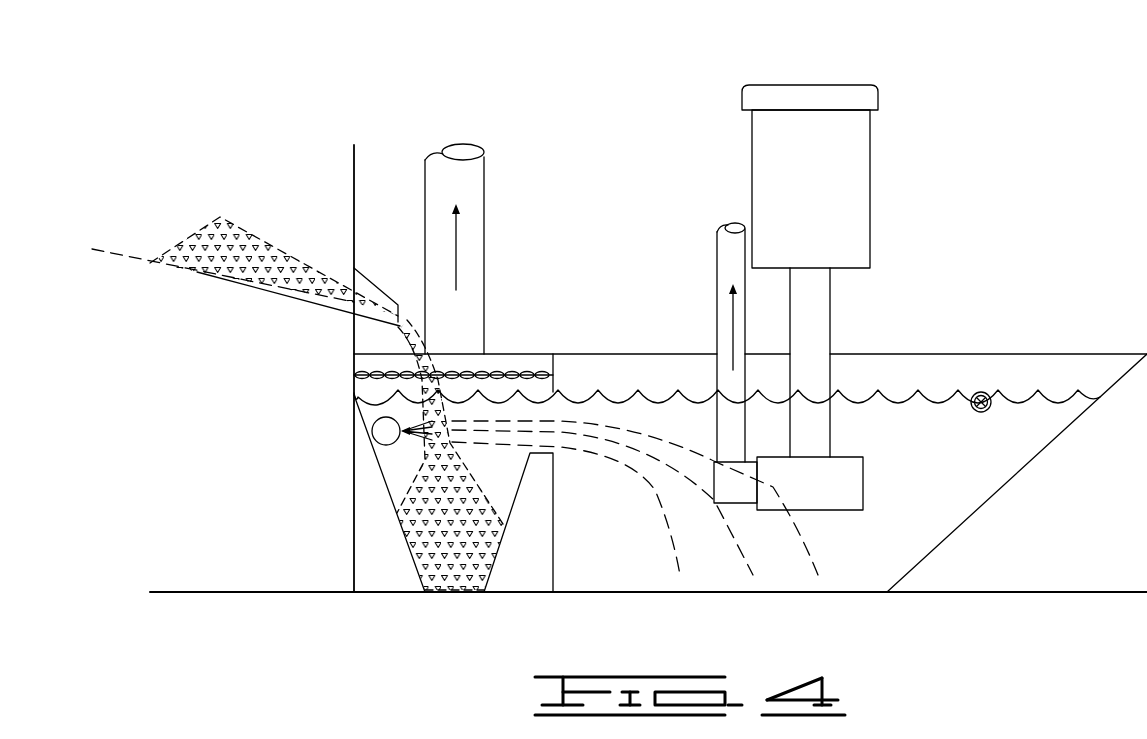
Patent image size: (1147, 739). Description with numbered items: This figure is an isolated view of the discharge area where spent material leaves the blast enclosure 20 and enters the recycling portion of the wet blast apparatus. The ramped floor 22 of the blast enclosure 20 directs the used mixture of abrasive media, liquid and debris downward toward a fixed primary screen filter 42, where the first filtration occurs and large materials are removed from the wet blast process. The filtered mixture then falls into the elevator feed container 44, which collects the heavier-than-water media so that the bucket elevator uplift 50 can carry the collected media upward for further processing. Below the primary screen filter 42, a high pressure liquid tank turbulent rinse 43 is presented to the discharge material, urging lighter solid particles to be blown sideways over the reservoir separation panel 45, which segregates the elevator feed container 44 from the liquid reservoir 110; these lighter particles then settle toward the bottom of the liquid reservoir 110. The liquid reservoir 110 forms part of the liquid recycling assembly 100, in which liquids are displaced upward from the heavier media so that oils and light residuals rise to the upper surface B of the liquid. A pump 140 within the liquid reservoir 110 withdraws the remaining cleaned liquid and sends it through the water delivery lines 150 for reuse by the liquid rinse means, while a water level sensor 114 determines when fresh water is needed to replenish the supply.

The blast enclosure 20 is at (357, 163).
The ramped floor 22 is at (198, 278).
The fixed primary screen filter 42 is at (505, 375).
The high pressure liquid tank turbulent rinse 43 is at (382, 431).
The elevator feed container 44 is at (387, 487).
The reservoir separation panel 45 is at (555, 553).
The bucket elevator uplift 50 is at (486, 222).
The liquid recycling assembly 100 is at (1007, 228).
The liquid reservoir 110 is at (1018, 475).
The water level sensor 114 is at (985, 392).
The pump 140 is at (826, 194).
The water delivery lines 150 is at (717, 278).
The upper surface of the liquids B is at (899, 400).